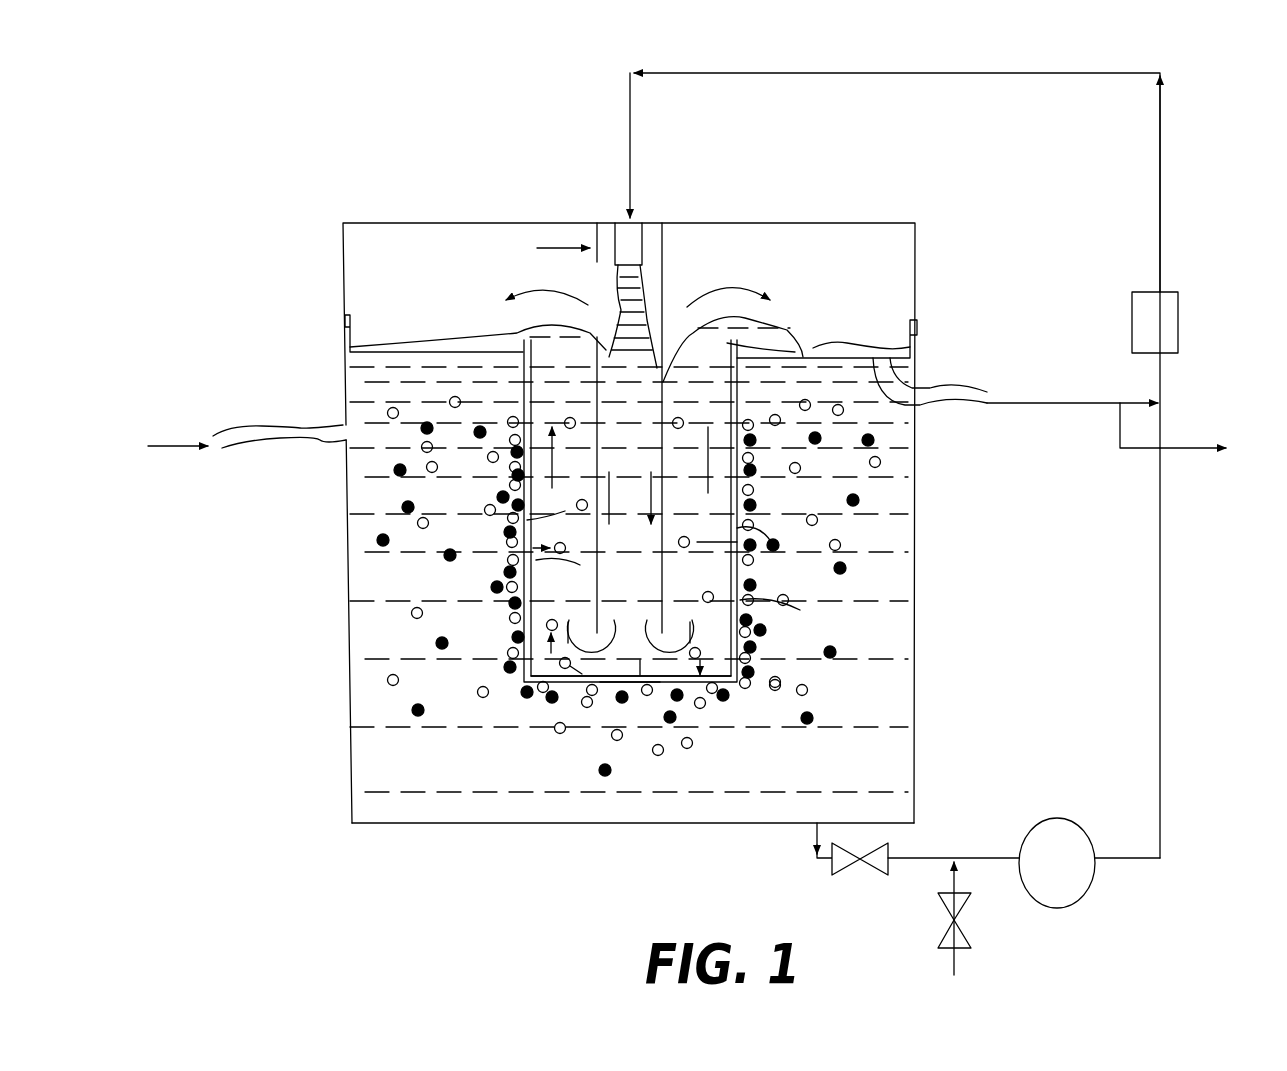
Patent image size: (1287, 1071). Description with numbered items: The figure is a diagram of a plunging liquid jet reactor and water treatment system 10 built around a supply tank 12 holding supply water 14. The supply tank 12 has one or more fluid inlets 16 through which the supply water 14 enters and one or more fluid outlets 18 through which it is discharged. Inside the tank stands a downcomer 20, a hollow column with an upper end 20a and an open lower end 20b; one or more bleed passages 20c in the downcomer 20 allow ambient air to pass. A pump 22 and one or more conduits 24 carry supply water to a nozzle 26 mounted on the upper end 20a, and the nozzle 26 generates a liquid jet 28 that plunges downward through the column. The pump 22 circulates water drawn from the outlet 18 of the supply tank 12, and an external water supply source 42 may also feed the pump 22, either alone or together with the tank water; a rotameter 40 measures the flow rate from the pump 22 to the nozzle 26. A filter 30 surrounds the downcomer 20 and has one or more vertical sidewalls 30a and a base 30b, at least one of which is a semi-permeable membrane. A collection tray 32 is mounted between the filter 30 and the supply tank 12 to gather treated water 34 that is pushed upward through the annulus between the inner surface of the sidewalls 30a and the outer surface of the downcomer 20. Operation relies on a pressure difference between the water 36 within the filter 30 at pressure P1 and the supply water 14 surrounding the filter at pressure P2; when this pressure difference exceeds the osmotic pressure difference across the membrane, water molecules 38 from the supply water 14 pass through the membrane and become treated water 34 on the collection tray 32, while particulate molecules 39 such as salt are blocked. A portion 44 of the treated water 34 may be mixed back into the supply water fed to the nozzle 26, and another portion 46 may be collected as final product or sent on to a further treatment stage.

The water treatment system 10 is at (303, 206).
The supply tank 12 is at (352, 792).
The supply water 14 is at (455, 803).
The fluid inlet 16 is at (265, 425).
The fluid outlet 18 is at (815, 832).
The downcomer 20 is at (663, 307).
The upper end 20a is at (610, 223).
The open lower end 20b is at (563, 613).
The bleed passage 20c is at (595, 262).
The pump 22 is at (1070, 905).
The conduit 24 is at (1163, 675).
The nozzle 26 is at (642, 225).
The liquid jet 28 is at (625, 377).
The filter 30 is at (757, 640).
The vertical sidewall 30a is at (747, 512).
The base 30b is at (605, 677).
The collection tray 32 is at (803, 357).
The treated water 34 is at (527, 337).
The water within filter 36 is at (622, 653).
The water molecules 38 is at (640, 660).
The particulate molecules 39 is at (740, 707).
The rotameter 40 is at (1180, 320).
The external water supply source 42 is at (953, 957).
The portion of treated water 44 is at (1163, 403).
The another portion of treated water 46 is at (1200, 453).
The pressure P1 is at (590, 601).
The pressure P2 is at (830, 605).